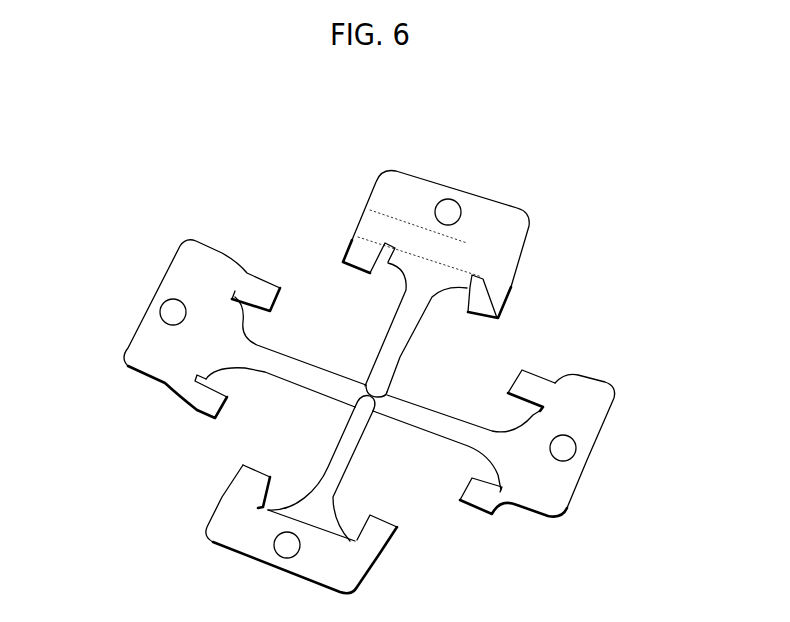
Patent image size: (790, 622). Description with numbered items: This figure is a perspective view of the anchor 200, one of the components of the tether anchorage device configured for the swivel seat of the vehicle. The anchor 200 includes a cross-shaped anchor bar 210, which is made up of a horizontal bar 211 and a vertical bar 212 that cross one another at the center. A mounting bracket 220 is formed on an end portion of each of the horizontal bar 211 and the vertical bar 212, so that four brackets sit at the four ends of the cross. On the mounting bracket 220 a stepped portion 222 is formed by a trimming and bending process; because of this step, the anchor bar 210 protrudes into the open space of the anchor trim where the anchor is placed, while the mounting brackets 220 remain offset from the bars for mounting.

The anchor 200 is at (341, 201).
The anchor bar 210 is at (163, 508).
The horizontal bar 211 is at (277, 373).
The vertical bar 212 is at (333, 455).
The mounting bracket 220 is at (500, 217).
The stepped portion 222 is at (515, 273).